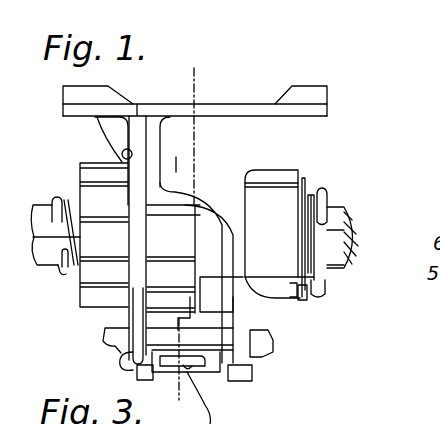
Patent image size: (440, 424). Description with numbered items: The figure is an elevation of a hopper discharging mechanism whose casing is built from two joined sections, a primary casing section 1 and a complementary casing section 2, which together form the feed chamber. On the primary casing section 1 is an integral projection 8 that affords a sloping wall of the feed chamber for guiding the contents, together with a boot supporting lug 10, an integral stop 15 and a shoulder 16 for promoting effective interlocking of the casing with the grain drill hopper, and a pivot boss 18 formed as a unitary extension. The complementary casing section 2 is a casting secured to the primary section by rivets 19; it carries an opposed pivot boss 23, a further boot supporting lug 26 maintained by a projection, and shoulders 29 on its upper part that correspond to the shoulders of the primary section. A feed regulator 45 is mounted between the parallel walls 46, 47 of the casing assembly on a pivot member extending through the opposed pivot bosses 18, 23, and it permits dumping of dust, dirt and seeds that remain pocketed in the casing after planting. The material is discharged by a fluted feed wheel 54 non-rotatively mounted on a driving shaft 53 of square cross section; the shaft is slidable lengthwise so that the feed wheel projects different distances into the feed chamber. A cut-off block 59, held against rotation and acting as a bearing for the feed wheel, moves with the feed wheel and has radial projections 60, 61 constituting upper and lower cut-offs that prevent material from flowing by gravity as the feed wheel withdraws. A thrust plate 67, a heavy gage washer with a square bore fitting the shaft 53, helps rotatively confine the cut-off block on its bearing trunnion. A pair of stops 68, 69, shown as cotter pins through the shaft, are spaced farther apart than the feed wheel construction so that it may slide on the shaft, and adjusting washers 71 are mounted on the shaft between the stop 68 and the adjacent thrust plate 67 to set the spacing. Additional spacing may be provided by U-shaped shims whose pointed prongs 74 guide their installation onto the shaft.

The primary casing section 1 is at (240, 105).
The complementary casing section 2 is at (137, 112).
The integral projection 8 is at (190, 405).
The boot supporting lug 10 is at (252, 358).
The integral stop 15 is at (268, 345).
The shoulder 16 is at (318, 97).
The pivot boss 18 is at (255, 382).
The rivets 19 is at (123, 153).
The pivot boss 23 is at (136, 378).
The boot supporting lug 26 is at (105, 338).
The shoulders 29 is at (72, 98).
The feed regulator 45 is at (212, 367).
The parallel wall 46 is at (147, 272).
The parallel wall 47 is at (298, 303).
The driving shaft 53 is at (357, 232).
The feed wheel 54 is at (79, 178).
The cut-off block 59 is at (268, 213).
The radial projection 60 is at (290, 178).
The radial projection 61 is at (272, 300).
The thrust plate 67 is at (302, 297).
The stop 68 is at (323, 193).
The stop 69 is at (63, 279).
The adjusting washers 71 is at (305, 296).
The prongs 74 is at (340, 210).